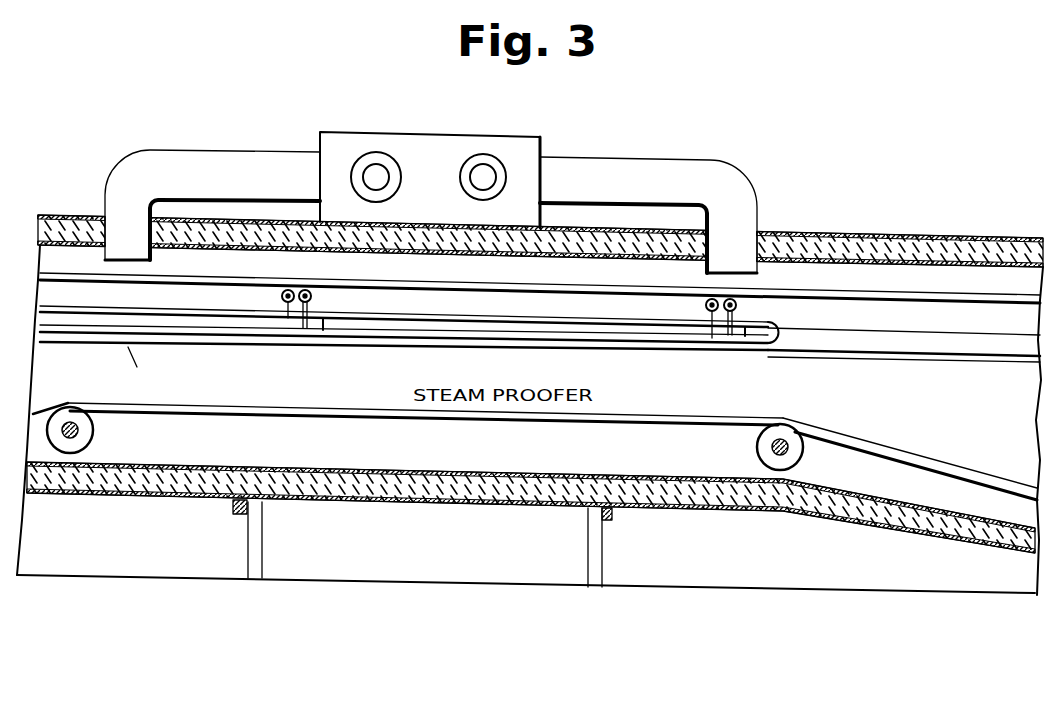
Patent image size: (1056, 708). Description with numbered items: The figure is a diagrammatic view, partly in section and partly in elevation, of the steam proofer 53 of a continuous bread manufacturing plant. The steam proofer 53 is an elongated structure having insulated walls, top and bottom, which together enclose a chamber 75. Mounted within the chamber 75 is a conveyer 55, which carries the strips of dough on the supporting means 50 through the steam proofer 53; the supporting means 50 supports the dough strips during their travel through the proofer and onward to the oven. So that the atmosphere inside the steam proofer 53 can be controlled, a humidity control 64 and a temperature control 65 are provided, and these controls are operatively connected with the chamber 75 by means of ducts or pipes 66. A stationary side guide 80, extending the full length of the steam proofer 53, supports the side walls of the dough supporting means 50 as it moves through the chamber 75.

The ducts or pipes 66 is at (213, 160).
The humidity control 64 is at (367, 172).
The temperature control 65 is at (478, 172).
The steam proofer 53 is at (861, 270).
The chamber 75 is at (540, 278).
The supporting means 50 is at (912, 338).
The conveyer 55 is at (358, 346).
The stationary side guide 80 is at (672, 332).